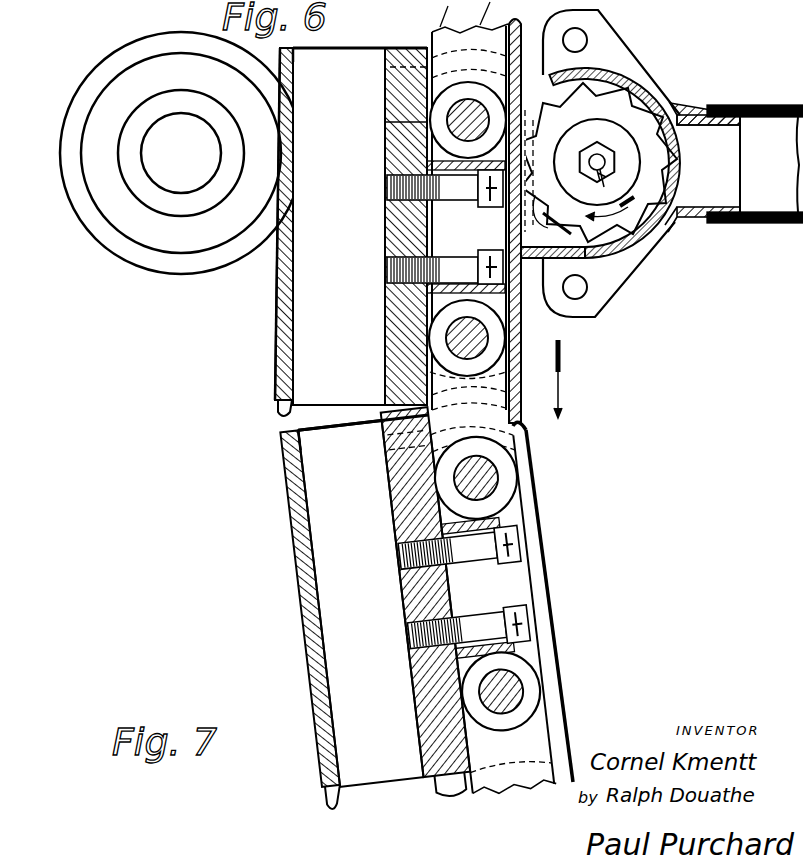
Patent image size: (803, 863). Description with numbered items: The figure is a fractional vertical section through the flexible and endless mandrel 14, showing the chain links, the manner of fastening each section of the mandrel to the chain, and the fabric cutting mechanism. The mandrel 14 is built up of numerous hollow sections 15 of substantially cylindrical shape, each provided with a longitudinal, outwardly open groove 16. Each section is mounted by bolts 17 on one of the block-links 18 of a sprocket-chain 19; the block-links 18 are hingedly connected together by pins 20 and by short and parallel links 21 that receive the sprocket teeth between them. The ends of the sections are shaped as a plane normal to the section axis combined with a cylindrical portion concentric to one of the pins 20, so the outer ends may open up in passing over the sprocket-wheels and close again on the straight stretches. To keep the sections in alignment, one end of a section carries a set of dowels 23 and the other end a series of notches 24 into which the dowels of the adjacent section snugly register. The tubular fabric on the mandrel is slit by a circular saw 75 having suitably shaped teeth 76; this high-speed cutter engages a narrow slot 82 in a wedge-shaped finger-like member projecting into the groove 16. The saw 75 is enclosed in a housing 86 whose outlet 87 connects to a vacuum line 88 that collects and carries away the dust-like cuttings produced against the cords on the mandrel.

In FIG. 6, the flexible and endless mandrel 14 is at (277, 343).
In FIG. 6, the hollow sections 15 is at (276, 291).
In FIG. 7, the hollow sections 15 is at (287, 494).
In FIG. 6, the groove 16 is at (537, 316).
In FIG. 7, the groove 16 is at (540, 527).
In FIG. 6, the bolts 17 is at (382, 192).
In FIG. 7, the bolts 17 is at (403, 557).
In FIG. 6, the block-links 18 is at (518, 315).
In FIG. 7, the block-links 18 is at (530, 573).
In FIG. 7, the sprocket-chain 19 is at (502, 794).
In FIG. 6, the pins 20 is at (450, 118).
In FIG. 7, the pins 20 is at (492, 478).
In FIG. 7, the short and parallel links 21 is at (513, 433).
In FIG. 6, the dowels 23 is at (280, 413).
In FIG. 7, the dowels 23 is at (440, 797).
In FIG. 6, the notches 24 is at (383, 70).
In FIG. 7, the notches 24 is at (387, 450).
In FIG. 6, the circular saw 75 is at (632, 120).
In FIG. 6, the teeth 76 is at (633, 68).
In FIG. 6, the slot 82 is at (532, 133).
In FIG. 6, the housing 86 is at (617, 259).
In FIG. 6, the outlet 87 is at (697, 216).
In FIG. 6, the vacuum line 88 is at (775, 197).